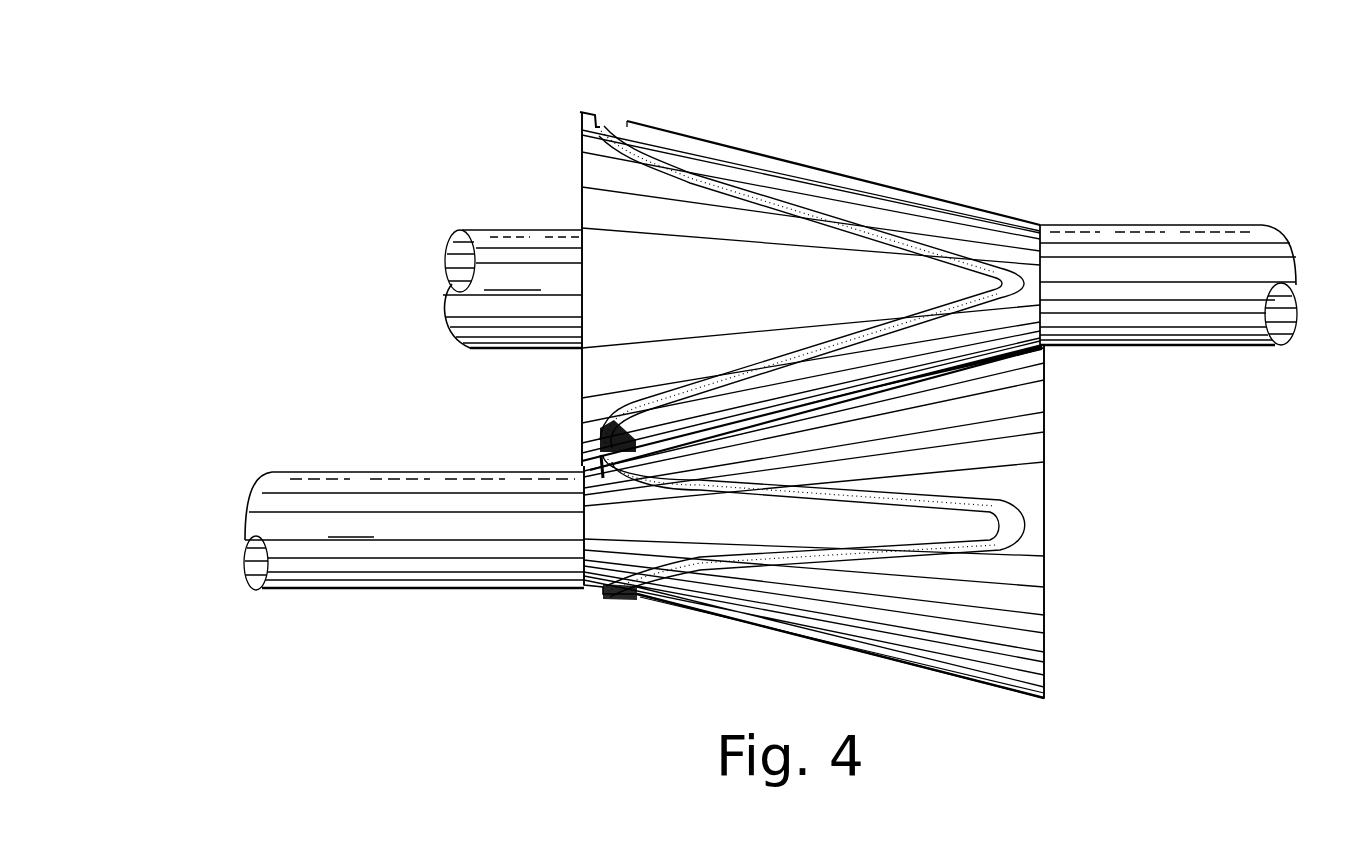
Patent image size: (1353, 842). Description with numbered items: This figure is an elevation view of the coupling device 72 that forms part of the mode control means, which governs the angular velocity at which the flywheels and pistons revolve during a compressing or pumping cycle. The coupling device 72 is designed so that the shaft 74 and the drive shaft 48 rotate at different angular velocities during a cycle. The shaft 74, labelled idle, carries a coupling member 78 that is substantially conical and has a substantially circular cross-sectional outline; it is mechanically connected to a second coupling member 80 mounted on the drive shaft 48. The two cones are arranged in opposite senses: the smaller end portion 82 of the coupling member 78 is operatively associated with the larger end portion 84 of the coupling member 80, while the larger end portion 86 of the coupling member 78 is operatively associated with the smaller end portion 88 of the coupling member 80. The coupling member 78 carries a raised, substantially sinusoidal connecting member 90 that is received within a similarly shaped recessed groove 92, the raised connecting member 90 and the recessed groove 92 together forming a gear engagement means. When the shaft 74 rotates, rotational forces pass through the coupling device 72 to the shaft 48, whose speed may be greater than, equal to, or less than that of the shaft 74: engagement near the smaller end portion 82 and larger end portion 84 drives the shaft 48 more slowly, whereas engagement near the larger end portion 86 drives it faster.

The drive shaft 48 is at (511, 232).
The coupling device 72 is at (820, 146).
The shaft 74 is at (367, 587).
The coupling member 78 is at (827, 649).
The coupling member 80 is at (770, 155).
The smaller end portion 82 is at (585, 587).
The larger end portion 84 is at (581, 111).
The larger end portion 86 is at (1046, 698).
The smaller end portion 88 is at (1032, 223).
The connecting member 90 is at (628, 603).
The recessed groove 92 is at (618, 124).